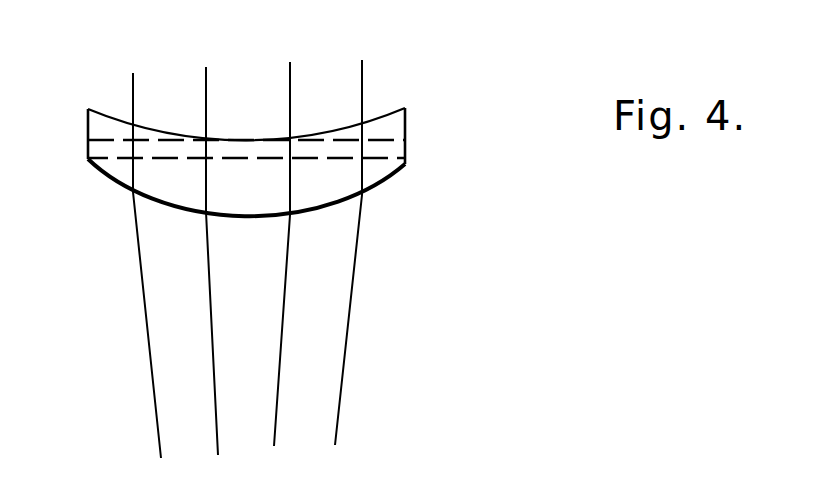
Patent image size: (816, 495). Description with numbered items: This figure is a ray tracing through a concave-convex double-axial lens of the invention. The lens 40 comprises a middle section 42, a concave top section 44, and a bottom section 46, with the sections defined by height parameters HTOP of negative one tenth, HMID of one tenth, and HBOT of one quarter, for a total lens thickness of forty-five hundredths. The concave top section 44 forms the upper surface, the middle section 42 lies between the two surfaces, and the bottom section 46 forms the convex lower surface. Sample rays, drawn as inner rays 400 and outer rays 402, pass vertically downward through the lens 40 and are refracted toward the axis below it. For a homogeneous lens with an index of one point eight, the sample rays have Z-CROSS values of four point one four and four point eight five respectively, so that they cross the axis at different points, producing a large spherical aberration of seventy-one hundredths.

The lens 40 is at (119, 223).
The middle section 42 is at (406, 143).
The top section 44 is at (399, 130).
The bottom section 46 is at (377, 168).
The central light rays 400 is at (288, 90).
The peripheral light rays 402 is at (131, 92).